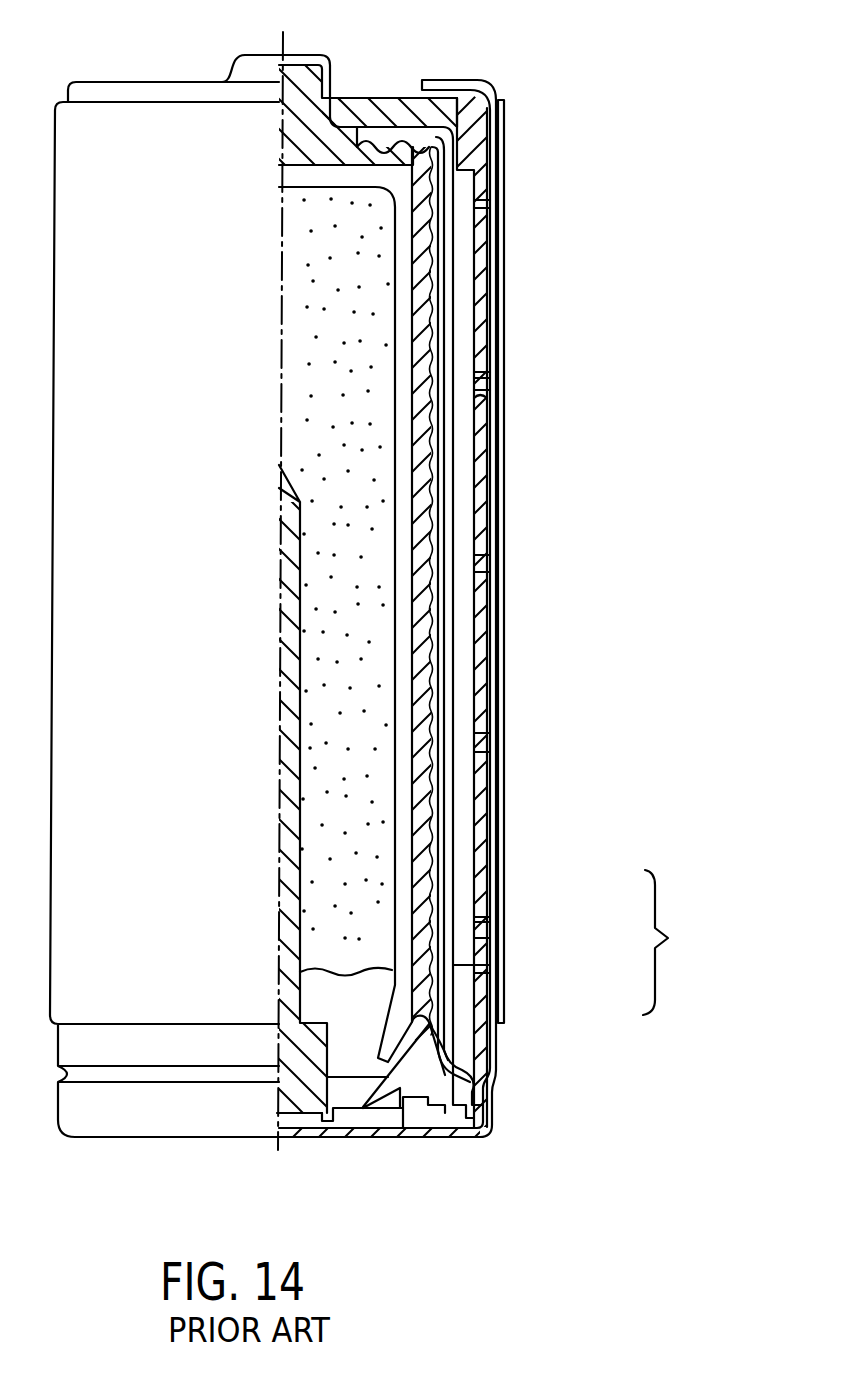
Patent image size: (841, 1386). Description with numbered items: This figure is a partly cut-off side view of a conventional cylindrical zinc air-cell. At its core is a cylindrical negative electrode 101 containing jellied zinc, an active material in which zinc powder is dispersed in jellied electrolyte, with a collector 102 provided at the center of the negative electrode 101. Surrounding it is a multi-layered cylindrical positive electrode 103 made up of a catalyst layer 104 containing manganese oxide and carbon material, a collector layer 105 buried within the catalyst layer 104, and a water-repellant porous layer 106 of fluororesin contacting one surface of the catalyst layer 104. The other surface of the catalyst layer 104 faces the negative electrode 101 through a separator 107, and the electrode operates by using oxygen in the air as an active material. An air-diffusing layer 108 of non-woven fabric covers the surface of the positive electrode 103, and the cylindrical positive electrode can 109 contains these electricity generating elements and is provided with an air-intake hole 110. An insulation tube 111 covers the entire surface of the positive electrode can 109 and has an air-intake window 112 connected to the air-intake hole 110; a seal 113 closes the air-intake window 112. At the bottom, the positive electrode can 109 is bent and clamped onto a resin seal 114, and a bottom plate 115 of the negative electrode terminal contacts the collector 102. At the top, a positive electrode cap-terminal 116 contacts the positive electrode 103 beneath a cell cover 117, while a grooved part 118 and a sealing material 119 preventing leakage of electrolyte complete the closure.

The negative electrode 101 is at (368, 670).
The collector 102 is at (295, 1123).
The positive electrode 103 is at (681, 942).
The catalyst layer 104 is at (437, 920).
The collector layer 105 is at (437, 875).
The water-repellant porous layer 106 is at (452, 963).
The separator 107 is at (402, 770).
The air-diffusing layer 108 is at (463, 588).
The positive electrode can 109 is at (487, 502).
The air-intake hole 110 is at (488, 366).
The insulation tube 111 is at (483, 397).
The air-intake window 112 is at (490, 205).
The seal 113 is at (503, 298).
The resin seal 114 is at (430, 1080).
The bottom plate 115 is at (370, 1137).
The positive electrode cap-terminal 116 is at (317, 53).
The cell cover 117 is at (365, 110).
The grooved part 118 is at (492, 1077).
The sealing material 119 is at (470, 1072).